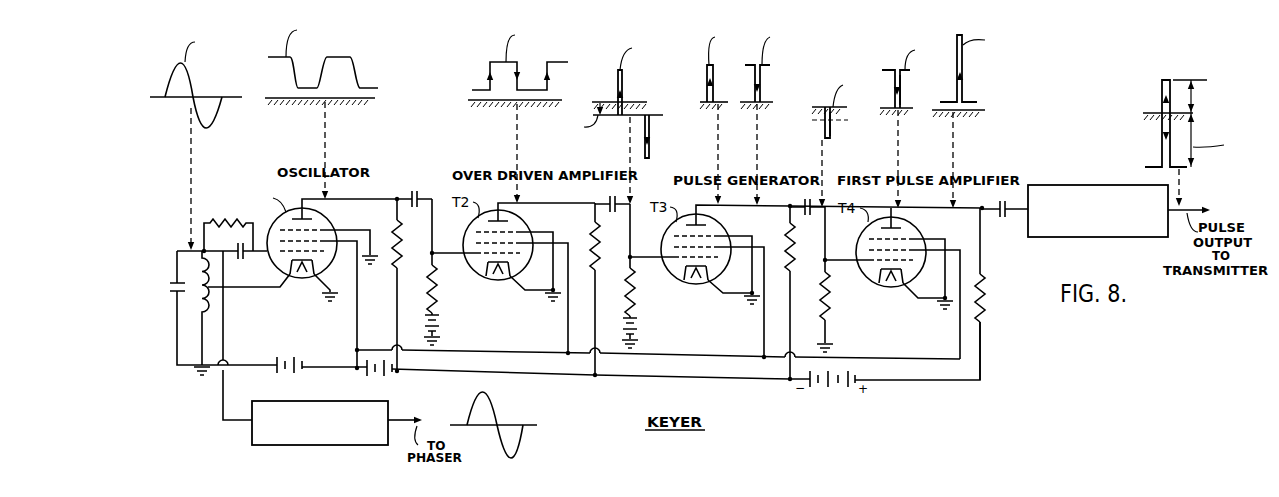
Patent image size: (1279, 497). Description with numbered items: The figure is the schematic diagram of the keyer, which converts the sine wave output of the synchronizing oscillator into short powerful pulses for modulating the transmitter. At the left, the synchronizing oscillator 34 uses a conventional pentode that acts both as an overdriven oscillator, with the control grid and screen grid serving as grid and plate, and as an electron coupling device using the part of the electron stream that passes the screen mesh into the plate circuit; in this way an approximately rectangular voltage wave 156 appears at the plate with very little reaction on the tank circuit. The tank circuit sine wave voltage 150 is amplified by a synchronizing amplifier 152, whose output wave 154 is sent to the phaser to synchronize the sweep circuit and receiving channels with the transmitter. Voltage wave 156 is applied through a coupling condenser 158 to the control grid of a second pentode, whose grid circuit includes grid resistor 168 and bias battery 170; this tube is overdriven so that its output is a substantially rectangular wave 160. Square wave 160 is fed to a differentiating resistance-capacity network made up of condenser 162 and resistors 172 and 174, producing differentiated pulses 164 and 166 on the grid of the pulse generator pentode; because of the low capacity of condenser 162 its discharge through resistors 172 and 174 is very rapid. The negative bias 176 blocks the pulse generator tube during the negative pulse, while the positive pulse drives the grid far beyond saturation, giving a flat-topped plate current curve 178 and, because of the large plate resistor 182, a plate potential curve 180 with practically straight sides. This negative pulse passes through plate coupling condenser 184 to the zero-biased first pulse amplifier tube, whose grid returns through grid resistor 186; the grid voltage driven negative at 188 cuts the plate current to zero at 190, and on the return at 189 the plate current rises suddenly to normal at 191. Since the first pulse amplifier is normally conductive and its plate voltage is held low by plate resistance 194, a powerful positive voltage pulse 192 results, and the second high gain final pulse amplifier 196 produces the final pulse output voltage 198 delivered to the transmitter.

The synchronizing oscillator 34 is at (281, 328).
The tank circuit sine wave voltage 150 is at (193, 88).
The synchronizing amplifier 152 is at (313, 446).
The output wave 154 is at (493, 402).
The rectangular voltage wave 156 is at (320, 78).
The coupling condenser 158 is at (409, 192).
The rectangular wave 160 is at (489, 78).
The condenser 162 is at (608, 200).
The differentiated pulse 164 is at (618, 86).
The differentiated pulse 166 is at (645, 150).
The grid resistor 168 is at (437, 296).
The bias battery 170 is at (445, 323).
The resistor 172 is at (593, 236).
The resistor 174 is at (635, 296).
The negative bias 176 is at (645, 327).
The plate current curve 178 is at (707, 84).
The potential curve 180 is at (755, 88).
The plate resistor 182 is at (788, 240).
The plate coupling condenser 184 is at (805, 205).
The grid resistor 186 is at (830, 302).
The negative grid voltage swing 188 is at (823, 128).
The grid voltage return 189 is at (832, 128).
The plate current drop 190 is at (894, 97).
The plate current rise 191 is at (901, 91).
The positive voltage pulse 192 is at (955, 66).
The plate resistance 194 is at (987, 305).
The amplifier 196 is at (1103, 238).
The final pulse output voltage 198 is at (1161, 100).